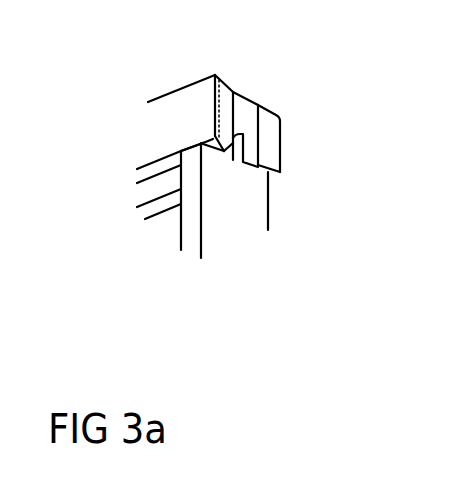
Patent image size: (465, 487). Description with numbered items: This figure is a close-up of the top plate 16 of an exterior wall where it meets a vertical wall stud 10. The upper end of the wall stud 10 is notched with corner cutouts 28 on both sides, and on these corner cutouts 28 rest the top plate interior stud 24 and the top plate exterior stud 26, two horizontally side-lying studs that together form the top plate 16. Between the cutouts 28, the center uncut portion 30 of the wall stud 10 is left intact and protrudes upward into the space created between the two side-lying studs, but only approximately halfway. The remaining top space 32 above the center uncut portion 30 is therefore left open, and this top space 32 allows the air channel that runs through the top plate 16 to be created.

The wall stud 10 is at (195, 200).
The top plate 16 is at (227, 169).
The top plate interior stud 24 is at (182, 113).
The top plate exterior stud 26 is at (263, 135).
The corner cutouts 28 is at (270, 146).
The center uncut portion 30 is at (233, 157).
The top space 32 is at (240, 112).